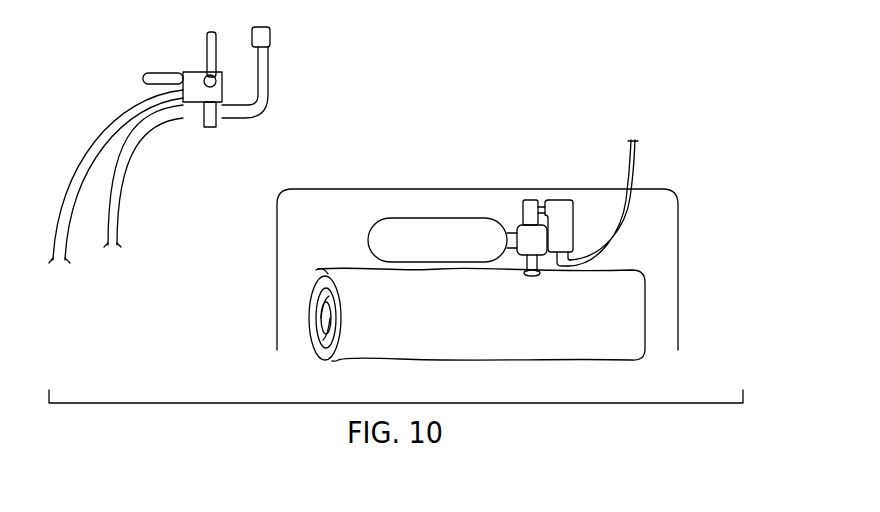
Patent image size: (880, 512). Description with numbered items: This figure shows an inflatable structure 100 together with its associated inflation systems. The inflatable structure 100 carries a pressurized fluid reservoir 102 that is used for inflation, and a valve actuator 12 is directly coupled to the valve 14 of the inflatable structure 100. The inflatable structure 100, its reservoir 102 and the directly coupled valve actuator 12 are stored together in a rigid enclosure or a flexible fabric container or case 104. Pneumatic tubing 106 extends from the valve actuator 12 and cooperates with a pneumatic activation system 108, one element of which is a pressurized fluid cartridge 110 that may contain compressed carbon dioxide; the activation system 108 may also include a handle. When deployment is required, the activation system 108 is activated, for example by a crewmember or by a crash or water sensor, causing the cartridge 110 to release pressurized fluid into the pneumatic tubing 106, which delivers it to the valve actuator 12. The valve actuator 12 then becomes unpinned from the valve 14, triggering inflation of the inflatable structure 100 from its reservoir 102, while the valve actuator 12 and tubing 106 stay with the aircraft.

The inflatable structure 100 is at (495, 324).
The pressurized fluid reservoir 102 is at (455, 252).
The container or case 104 is at (679, 262).
The pneumatic tubing 106 is at (117, 212).
The pneumatic activation system 108 is at (197, 120).
The pressurized fluid cartridge 110 is at (157, 72).
The valve actuator 12 is at (575, 222).
The valve 14 is at (506, 224).